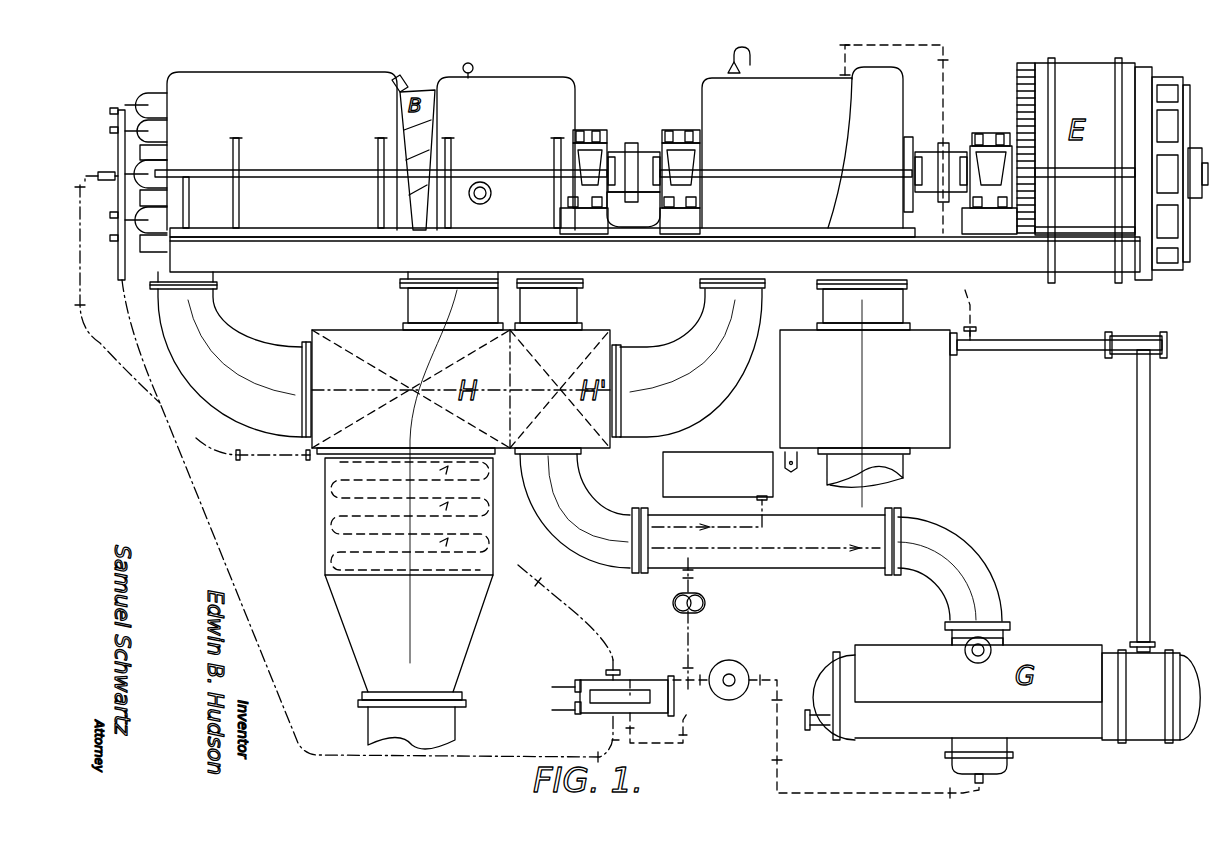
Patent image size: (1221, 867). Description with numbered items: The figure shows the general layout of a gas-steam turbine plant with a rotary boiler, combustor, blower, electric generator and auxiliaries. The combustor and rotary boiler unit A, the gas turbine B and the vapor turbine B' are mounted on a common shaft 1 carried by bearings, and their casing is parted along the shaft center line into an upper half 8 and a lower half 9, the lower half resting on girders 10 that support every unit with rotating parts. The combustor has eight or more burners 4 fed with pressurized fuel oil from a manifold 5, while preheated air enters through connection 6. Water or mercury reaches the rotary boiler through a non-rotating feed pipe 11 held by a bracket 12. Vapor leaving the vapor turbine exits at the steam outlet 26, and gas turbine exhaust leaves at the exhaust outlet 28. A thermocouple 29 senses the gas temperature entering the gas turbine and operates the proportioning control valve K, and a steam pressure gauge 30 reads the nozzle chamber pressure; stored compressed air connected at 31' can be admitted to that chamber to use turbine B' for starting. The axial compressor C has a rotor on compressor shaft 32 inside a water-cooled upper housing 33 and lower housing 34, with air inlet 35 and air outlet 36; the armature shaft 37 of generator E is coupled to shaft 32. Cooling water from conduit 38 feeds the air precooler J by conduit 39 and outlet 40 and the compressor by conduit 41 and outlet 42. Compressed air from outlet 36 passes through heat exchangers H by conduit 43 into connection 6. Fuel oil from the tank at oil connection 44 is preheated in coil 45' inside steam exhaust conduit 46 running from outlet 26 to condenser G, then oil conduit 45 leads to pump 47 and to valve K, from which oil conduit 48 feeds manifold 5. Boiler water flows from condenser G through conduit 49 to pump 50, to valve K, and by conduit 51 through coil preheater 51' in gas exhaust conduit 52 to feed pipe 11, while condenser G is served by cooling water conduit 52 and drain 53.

The common shaft 1 is at (592, 150).
The burners 4 is at (148, 220).
The manifold 5 is at (110, 131).
The connection 6 is at (218, 282).
The upper half 8 is at (350, 73).
The lower half 9 is at (645, 187).
The girders 10 is at (655, 254).
The feed pipe 11 is at (100, 180).
The bracket 12 is at (118, 152).
The steam outlet 26 is at (580, 280).
The exhaust outlet 28 is at (404, 280).
The thermocouple 29 is at (403, 82).
The steam pressure gauge 30 is at (472, 66).
The compressed air connection 31' is at (498, 200).
The compressor shaft 32 is at (655, 155).
The upper housing 33 is at (808, 58).
The lower housing 34 is at (750, 206).
The air inlet 35 is at (908, 280).
The air outlet 36 is at (703, 280).
The armature shaft 37 is at (978, 150).
The cooling water conduit 38 is at (1160, 338).
The conduit 39 is at (1030, 345).
The outlet 40 is at (865, 403).
The conduit 41 is at (872, 45).
The outlet 42 is at (750, 55).
The conduit 43 is at (238, 406).
The oil connection 44 is at (650, 730).
The oil conduit 45 is at (713, 607).
The coil 45' is at (766, 551).
The steam exhaust conduit 46 is at (575, 300).
The pump 47 is at (706, 603).
The oil conduit 48 is at (138, 352).
The conduit 49 is at (630, 690).
The pump 50 is at (740, 672).
The conduit 51 is at (374, 450).
The coil preheater 51' is at (383, 516).
The gas exhaust conduit 52 is at (405, 298).
The drain 53 is at (812, 722).